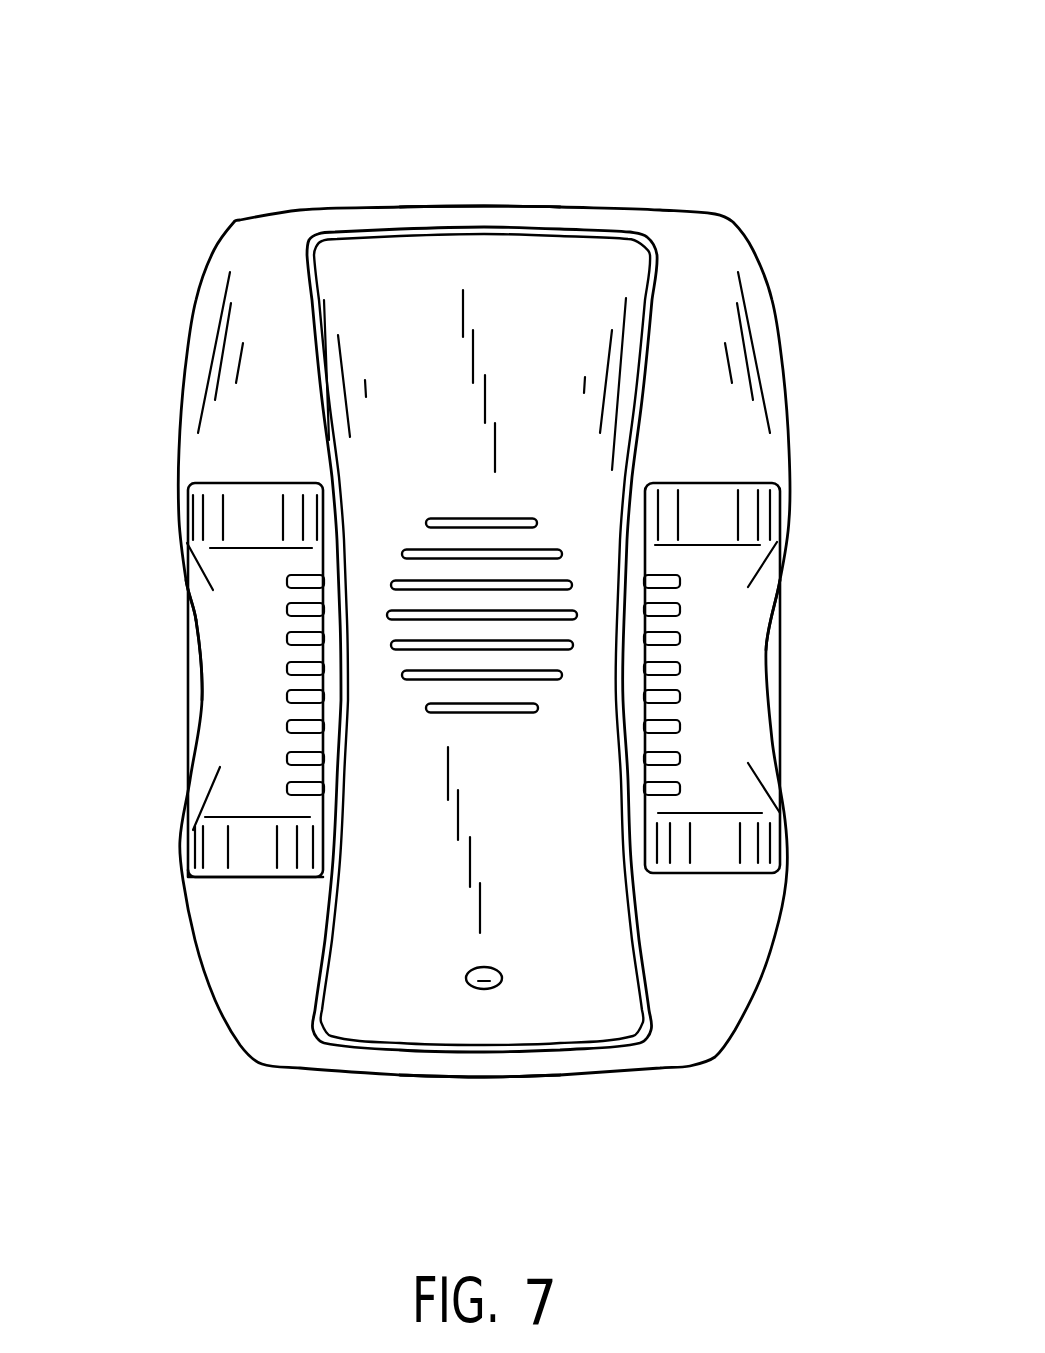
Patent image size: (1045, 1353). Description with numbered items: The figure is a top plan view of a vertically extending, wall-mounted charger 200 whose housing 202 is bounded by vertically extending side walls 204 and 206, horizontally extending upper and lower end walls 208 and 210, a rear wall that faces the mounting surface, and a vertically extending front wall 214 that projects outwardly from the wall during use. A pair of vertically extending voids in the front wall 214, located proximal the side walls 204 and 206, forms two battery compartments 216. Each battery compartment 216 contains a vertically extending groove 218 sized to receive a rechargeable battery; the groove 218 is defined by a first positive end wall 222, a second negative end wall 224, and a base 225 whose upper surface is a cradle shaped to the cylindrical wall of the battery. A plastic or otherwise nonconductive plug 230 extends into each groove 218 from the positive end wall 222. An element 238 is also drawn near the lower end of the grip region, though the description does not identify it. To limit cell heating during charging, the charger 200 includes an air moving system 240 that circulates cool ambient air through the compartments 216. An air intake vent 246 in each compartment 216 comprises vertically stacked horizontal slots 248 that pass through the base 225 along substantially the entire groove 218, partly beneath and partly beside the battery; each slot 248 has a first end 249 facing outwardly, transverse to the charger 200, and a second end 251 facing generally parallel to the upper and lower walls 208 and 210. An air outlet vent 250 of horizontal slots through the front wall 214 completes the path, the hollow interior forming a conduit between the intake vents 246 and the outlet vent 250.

The charger 200 is at (742, 113).
The housing 202 is at (737, 214).
The side wall 204 is at (770, 608).
The side wall 206 is at (195, 648).
The upper end wall 208 is at (485, 207).
The lower end wall 210 is at (490, 1080).
The front wall 214 is at (553, 329).
The battery compartment 216 is at (201, 751).
The groove 218 is at (200, 692).
The first positive end wall 222 is at (253, 483).
The second negative end wall 224 is at (283, 880).
The base 225 is at (257, 648).
The plug 230 is at (213, 505).
The grip pad end 238 is at (251, 877).
The air moving system 240 is at (383, 512).
The air intake vent 246 is at (677, 742).
The horizontal slots 248 is at (677, 608).
The first end 249 is at (680, 667).
The air outlet vent 250 is at (527, 509).
The second end 251 is at (645, 697).